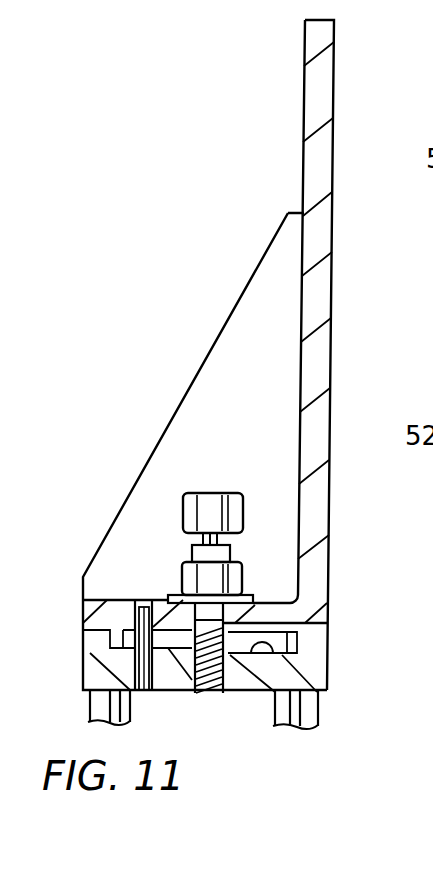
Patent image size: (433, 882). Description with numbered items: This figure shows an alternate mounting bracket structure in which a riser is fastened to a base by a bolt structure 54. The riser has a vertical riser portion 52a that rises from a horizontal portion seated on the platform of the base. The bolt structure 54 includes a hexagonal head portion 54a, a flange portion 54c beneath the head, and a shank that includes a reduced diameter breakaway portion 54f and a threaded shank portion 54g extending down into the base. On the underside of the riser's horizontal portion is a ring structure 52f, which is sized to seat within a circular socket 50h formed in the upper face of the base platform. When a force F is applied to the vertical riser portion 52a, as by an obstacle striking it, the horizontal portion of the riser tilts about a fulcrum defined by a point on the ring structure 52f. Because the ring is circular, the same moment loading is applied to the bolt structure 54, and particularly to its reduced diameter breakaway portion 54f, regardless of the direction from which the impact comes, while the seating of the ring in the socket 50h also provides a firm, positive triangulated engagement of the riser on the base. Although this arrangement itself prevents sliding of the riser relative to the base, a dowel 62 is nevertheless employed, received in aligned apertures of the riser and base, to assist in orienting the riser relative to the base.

The riser portion 52a is at (333, 218).
The ring structure 52f is at (303, 647).
The bolt structure 54 is at (184, 497).
The hexagonal head portion 54a is at (187, 491).
The flange portion 54c is at (168, 597).
The reduced diameter breakaway portion 54f is at (295, 640).
The threaded shank portion 54g is at (212, 693).
The dowel 62 is at (140, 668).
The circular socket 50h is at (318, 696).
The force F is at (301, 102).